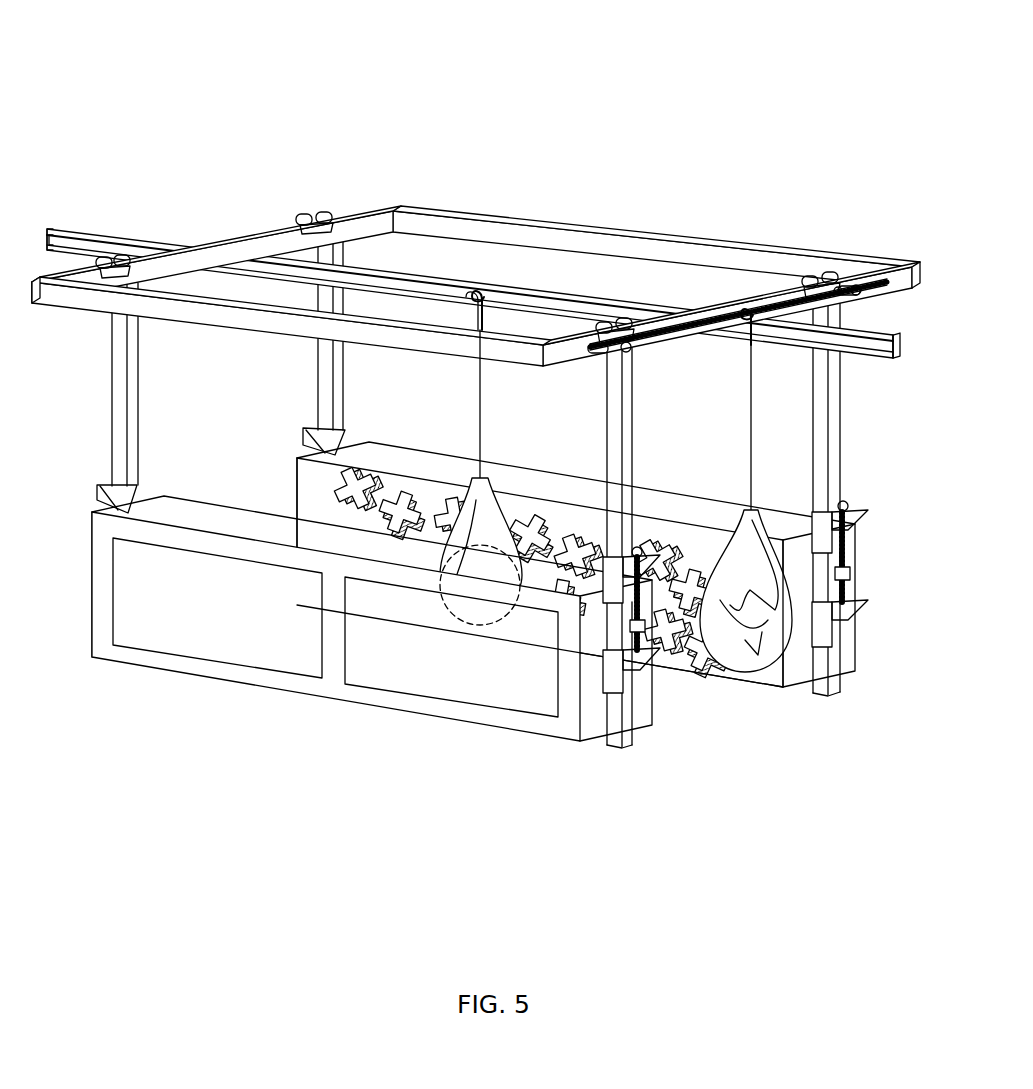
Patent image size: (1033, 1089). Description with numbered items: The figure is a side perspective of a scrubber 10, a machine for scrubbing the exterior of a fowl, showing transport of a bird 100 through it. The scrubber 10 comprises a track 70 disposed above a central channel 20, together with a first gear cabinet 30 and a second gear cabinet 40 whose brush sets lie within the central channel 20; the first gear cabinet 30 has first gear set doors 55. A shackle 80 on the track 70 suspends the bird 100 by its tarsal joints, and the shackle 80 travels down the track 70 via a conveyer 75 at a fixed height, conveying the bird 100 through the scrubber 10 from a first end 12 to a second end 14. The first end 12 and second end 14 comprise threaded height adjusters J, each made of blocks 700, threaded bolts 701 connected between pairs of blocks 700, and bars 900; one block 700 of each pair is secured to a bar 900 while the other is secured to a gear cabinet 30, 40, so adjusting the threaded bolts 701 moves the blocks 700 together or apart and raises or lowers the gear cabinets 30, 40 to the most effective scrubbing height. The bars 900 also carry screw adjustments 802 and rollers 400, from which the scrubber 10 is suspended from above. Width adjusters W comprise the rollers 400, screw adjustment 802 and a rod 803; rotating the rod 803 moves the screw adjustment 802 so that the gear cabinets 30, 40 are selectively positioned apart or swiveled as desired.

The scrubber 10 is at (266, 92).
The width adjusters W is at (213, 245).
The rollers 400 is at (105, 255).
The shackle 80 is at (492, 320).
The rod 803 is at (747, 300).
The screw adjustment 802 is at (848, 290).
The conveyer 75 is at (887, 327).
The track 70 is at (896, 345).
The bars 900 is at (110, 383).
The threaded height adjusters J is at (313, 450).
The first end 12 is at (293, 490).
The central channel 20 is at (509, 564).
The bird 100 is at (503, 547).
The first gear cabinet 30 is at (595, 725).
The first gear set doors 55 is at (207, 625).
The second gear cabinet 40 is at (797, 667).
The second end 14 is at (612, 705).
The blocks 700 is at (870, 630).
The threaded bolts 701 is at (850, 563).